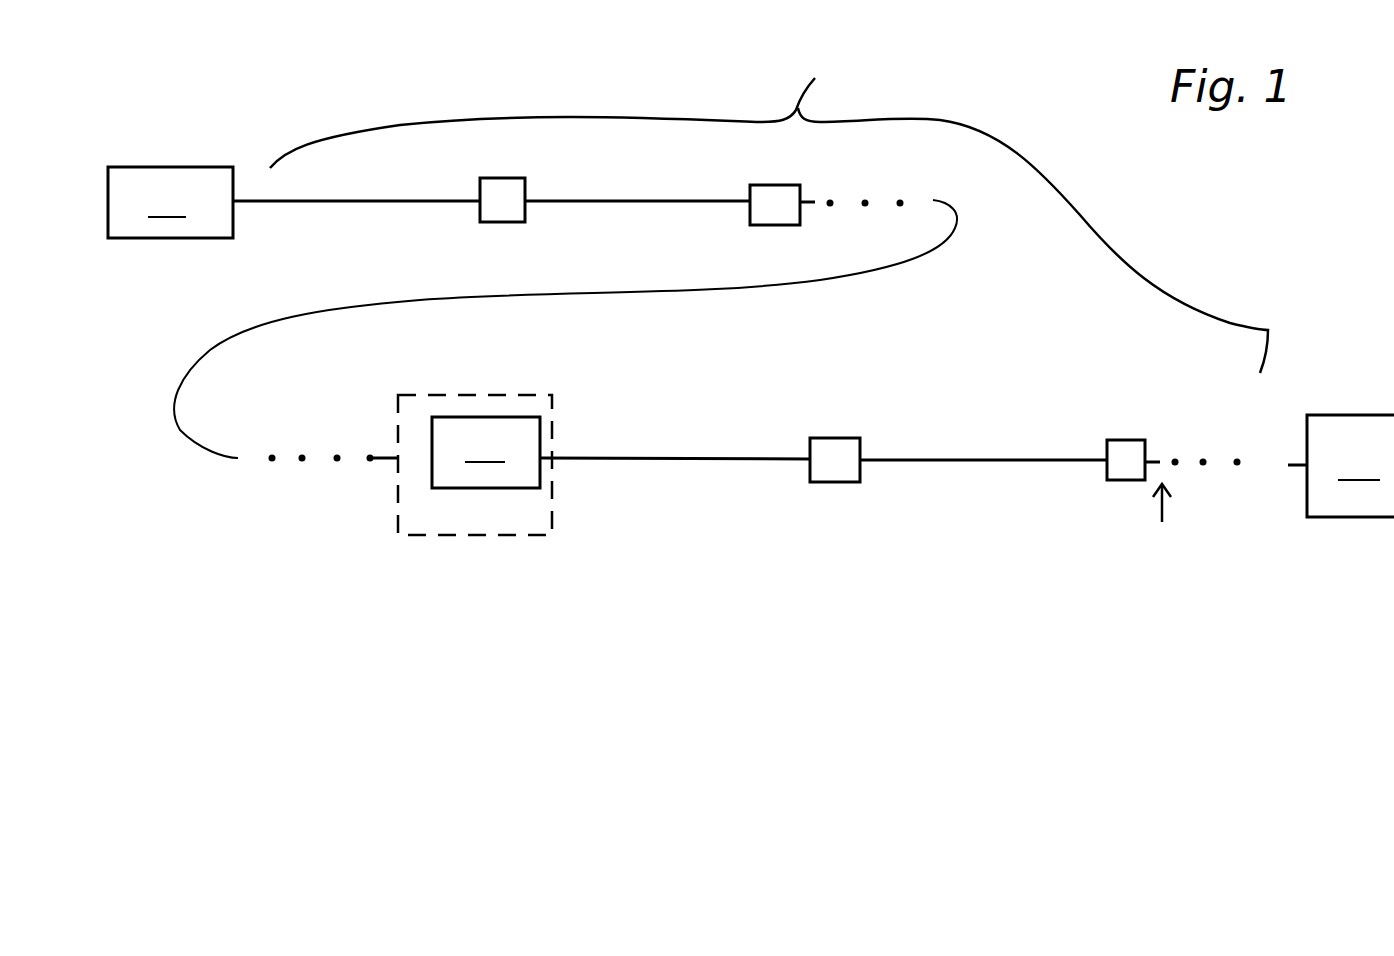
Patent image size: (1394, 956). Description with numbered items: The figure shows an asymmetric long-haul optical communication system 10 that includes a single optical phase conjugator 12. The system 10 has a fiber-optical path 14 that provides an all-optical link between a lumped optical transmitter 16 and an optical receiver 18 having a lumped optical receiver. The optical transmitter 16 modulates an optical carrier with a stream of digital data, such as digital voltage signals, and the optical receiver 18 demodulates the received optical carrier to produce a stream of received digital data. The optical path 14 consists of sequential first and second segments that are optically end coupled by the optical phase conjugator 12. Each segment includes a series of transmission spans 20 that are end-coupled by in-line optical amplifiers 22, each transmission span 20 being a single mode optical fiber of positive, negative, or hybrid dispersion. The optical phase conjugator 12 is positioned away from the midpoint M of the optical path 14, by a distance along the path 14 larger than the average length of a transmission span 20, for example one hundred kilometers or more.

The long-haul optical communication system 10 is at (417, 742).
The optical phase conjugator 12 is at (486, 452).
The fiber-optical path 14 is at (769, 207).
The lumped optical transmitter 16 is at (170, 202).
The optical receiver 18 is at (1350, 466).
The transmission span 20 is at (355, 200).
The in-line optical amplifier 22 is at (505, 197).